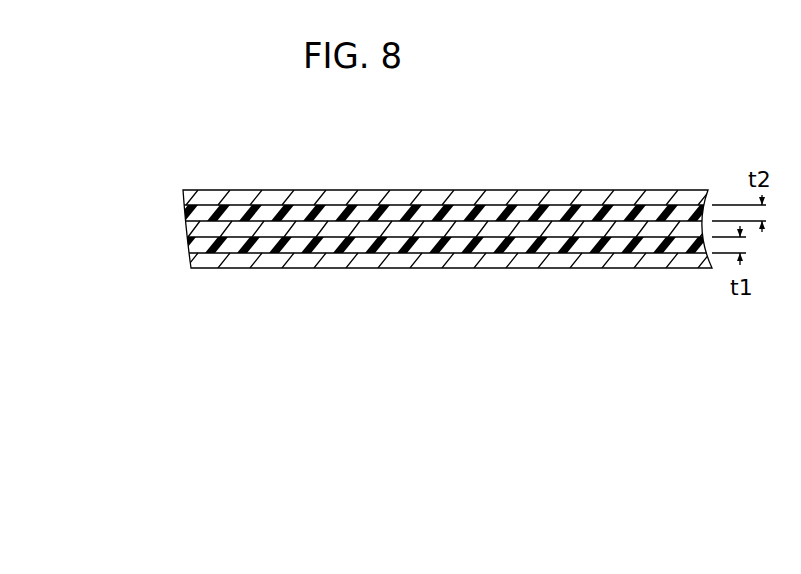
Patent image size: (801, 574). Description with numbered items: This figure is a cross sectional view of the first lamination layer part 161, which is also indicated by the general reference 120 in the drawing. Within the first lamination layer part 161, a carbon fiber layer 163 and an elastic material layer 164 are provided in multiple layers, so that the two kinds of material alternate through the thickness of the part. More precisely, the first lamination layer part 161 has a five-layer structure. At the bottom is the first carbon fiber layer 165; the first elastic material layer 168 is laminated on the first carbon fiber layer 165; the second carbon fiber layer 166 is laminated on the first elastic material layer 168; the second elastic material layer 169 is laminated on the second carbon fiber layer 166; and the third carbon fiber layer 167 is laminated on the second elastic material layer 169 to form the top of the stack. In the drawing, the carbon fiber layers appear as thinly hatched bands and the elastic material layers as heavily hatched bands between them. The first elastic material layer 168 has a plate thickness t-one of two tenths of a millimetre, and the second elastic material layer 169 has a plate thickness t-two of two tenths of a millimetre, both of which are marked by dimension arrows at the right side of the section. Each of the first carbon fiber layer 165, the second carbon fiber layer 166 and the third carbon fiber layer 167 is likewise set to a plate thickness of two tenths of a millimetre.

The piezoelectric element 120 is at (585, 140).
The first lamination layer part 161 is at (610, 178).
The carbon fiber layer 163 is at (75, 168).
The elastic material layer 164 is at (75, 62).
The first carbon fiber layer 165 is at (192, 260).
The second carbon fiber layer 166 is at (192, 234).
The third carbon fiber layer 167 is at (185, 203).
The first elastic material layer 168 is at (237, 245).
The second elastic material layer 169 is at (268, 213).